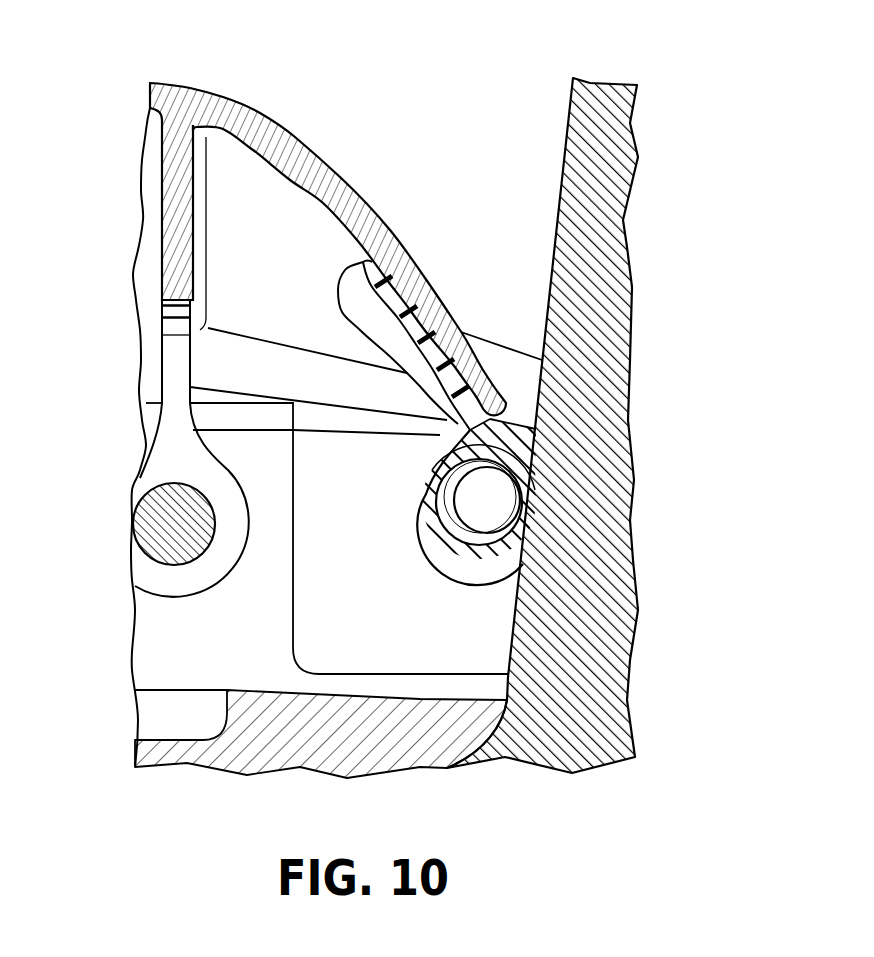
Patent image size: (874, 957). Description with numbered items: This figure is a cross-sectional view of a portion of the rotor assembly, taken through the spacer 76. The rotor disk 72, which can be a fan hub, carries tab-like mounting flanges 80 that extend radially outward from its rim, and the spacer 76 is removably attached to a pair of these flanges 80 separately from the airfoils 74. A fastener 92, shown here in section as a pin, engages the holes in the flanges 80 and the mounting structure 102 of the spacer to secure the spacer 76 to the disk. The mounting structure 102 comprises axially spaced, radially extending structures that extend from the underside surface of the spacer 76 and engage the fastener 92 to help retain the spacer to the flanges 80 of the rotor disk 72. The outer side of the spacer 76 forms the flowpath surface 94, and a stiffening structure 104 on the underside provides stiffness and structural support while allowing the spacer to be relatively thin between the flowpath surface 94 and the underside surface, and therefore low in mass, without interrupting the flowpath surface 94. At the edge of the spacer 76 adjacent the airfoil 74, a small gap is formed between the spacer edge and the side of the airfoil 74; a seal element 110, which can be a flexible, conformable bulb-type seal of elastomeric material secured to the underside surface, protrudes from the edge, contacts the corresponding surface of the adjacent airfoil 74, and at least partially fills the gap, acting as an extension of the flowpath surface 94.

The rotor disk 72 is at (268, 707).
The airfoil 74 is at (602, 309).
The spacer 76 is at (396, 101).
The mounting flange 80 is at (153, 603).
The fastener 92 is at (160, 512).
The flowpath surface 94 is at (218, 92).
The mounting structure 102 is at (160, 456).
The stiffening structure 104 is at (177, 203).
The seal element 110 is at (423, 537).